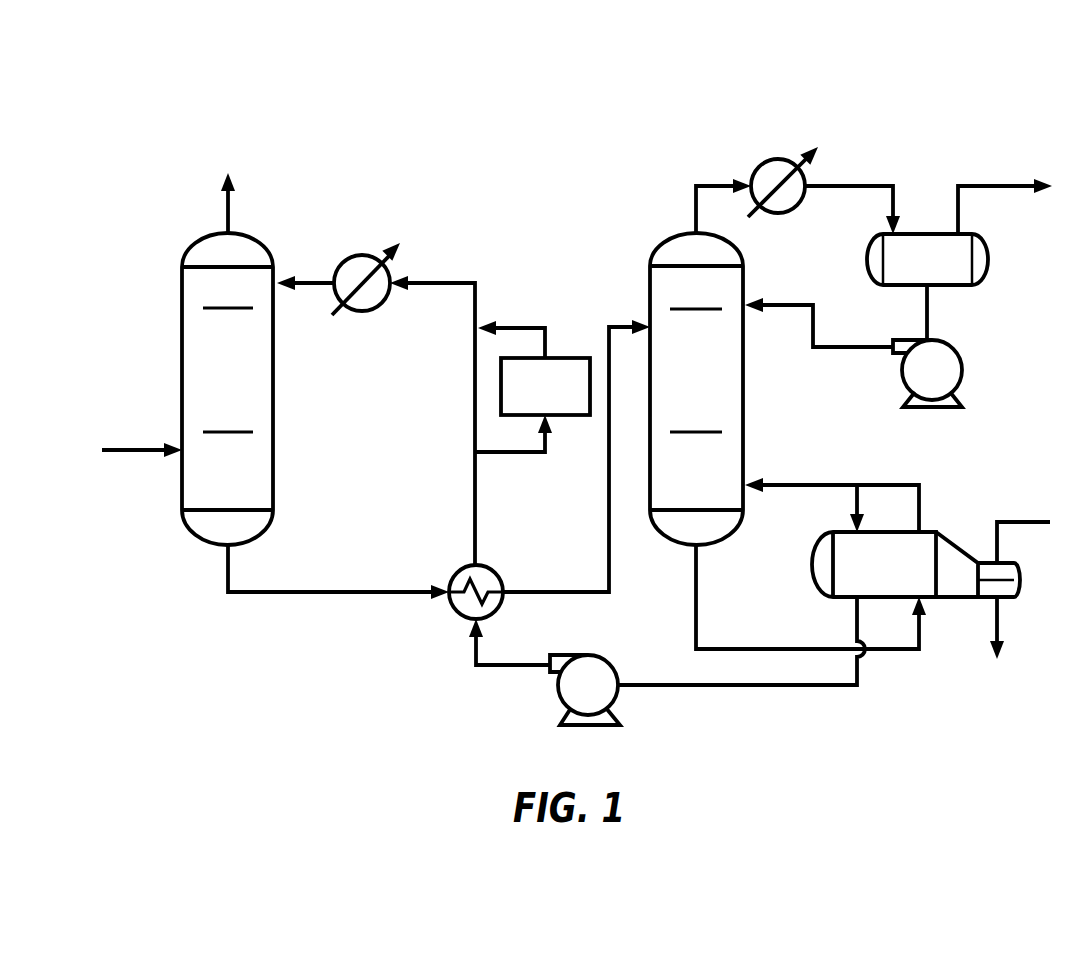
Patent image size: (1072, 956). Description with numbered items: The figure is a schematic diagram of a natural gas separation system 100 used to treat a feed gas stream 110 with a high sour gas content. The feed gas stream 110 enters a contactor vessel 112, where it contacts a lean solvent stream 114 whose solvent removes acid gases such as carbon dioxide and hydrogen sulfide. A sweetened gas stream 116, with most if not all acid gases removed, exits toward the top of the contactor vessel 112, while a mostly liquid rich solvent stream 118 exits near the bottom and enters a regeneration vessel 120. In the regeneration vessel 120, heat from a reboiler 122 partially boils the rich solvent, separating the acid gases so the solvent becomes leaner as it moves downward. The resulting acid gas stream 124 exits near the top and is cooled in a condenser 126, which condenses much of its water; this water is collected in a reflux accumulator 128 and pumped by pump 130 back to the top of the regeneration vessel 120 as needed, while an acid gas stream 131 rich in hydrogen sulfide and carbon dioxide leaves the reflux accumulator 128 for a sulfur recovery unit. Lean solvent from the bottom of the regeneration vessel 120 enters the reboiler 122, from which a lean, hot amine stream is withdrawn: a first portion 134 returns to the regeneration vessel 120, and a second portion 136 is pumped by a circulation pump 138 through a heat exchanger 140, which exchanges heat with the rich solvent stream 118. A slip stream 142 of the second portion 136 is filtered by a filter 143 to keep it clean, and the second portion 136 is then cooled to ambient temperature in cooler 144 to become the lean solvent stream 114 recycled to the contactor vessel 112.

The natural gas separation system 100 is at (157, 73).
The feed gas stream 110 is at (136, 446).
The contactor vessel 112 is at (180, 295).
The lean solvent stream 114 is at (318, 283).
The sweetened gas stream 116 is at (230, 213).
The rich solvent stream 118 is at (352, 590).
The regeneration vessel 120 is at (648, 287).
The reboiler 122 is at (950, 541).
The acid gas stream 124 is at (695, 202).
The condenser 126 is at (757, 164).
The reflux accumulator 128 is at (988, 252).
The pump 130 is at (960, 355).
The acid gas stream 131 is at (1027, 184).
The first portion 134 is at (793, 483).
The second portion 136 is at (735, 688).
The circulation pump 138 is at (606, 664).
The heat exchanger 140 is at (455, 574).
The slip stream 142 is at (514, 452).
The filter 143 is at (573, 358).
The cooler 144 is at (384, 306).